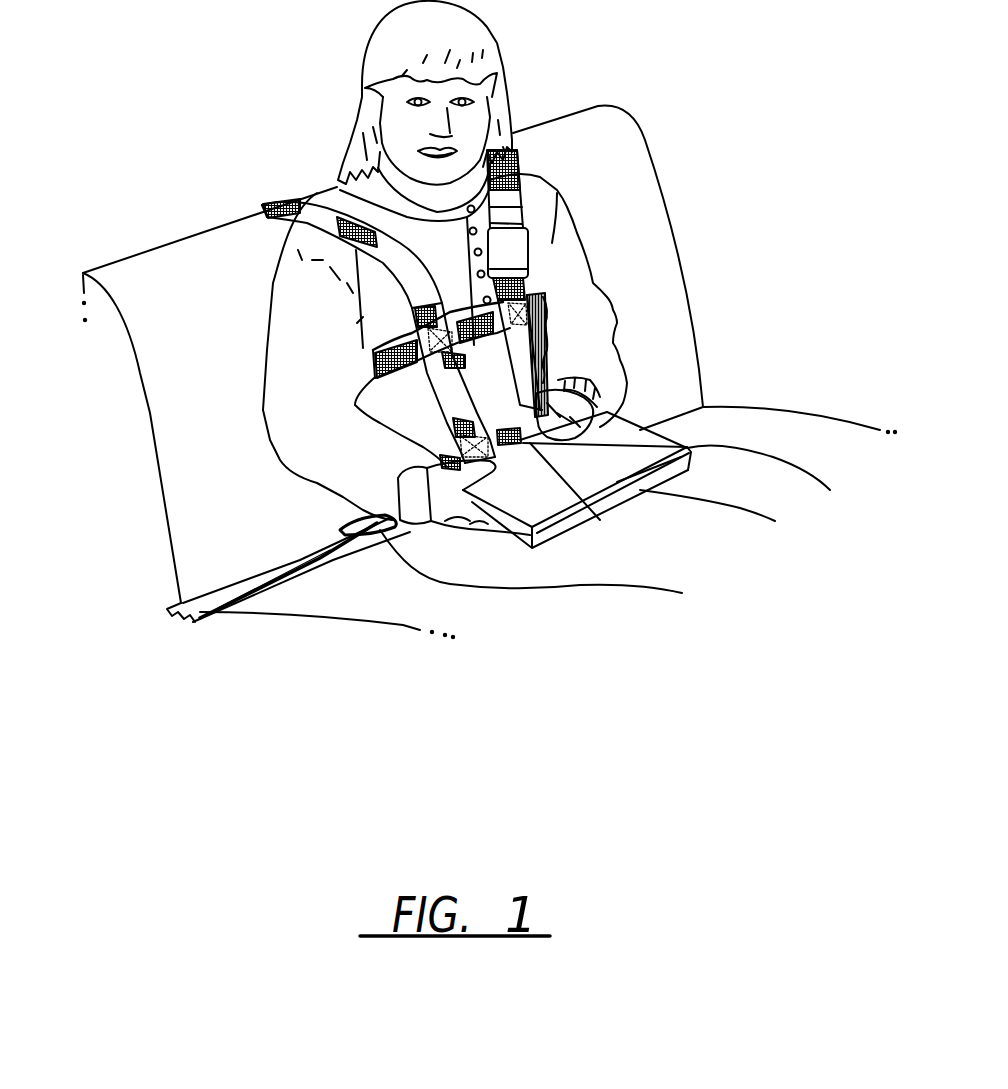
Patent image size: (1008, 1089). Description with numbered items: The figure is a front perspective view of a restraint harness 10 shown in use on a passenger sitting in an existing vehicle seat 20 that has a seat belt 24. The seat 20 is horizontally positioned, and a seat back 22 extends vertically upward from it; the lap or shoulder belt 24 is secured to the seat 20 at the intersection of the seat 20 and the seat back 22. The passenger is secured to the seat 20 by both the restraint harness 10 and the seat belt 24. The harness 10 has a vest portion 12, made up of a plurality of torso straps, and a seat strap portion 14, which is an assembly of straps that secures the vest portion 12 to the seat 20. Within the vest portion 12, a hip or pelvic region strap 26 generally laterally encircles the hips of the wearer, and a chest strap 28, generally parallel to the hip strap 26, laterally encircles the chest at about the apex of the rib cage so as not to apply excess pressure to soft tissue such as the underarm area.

The restraint harness 10 is at (440, 296).
The vest portion 12 is at (533, 292).
The seat strap portion 14 is at (290, 207).
The seat 20 is at (284, 607).
The seat back 22 is at (132, 265).
The seat belt 24 is at (330, 560).
The hip strap 26 is at (603, 521).
The chest strap 28 is at (372, 357).